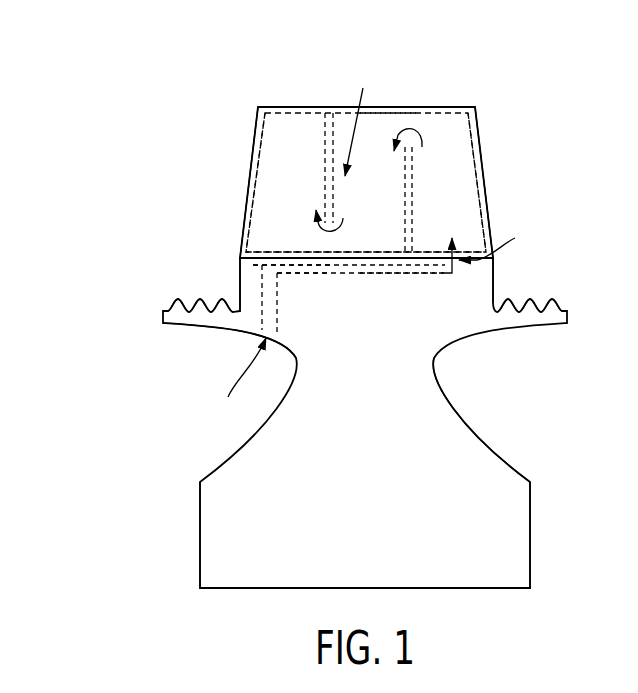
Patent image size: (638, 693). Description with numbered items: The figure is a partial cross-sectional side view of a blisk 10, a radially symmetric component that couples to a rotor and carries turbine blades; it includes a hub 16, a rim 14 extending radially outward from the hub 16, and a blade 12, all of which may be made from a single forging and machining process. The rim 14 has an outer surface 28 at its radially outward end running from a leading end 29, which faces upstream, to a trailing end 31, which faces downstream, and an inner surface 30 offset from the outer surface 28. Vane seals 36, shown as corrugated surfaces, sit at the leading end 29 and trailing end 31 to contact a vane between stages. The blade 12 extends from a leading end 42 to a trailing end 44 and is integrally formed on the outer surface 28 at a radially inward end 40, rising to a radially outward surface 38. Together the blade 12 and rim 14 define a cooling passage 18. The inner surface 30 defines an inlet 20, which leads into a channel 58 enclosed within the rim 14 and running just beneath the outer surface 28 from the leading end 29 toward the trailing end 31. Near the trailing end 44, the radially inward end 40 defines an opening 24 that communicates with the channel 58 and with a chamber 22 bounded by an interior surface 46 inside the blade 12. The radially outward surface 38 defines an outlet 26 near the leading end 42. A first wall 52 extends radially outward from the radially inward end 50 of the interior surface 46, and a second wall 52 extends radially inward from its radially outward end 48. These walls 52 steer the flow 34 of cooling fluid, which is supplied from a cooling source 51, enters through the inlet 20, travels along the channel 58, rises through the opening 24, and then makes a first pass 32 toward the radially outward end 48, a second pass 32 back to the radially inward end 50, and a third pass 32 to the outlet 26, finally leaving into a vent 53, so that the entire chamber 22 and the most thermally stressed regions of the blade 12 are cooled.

The blisk 10 is at (88, 300).
The blade 12 is at (224, 88).
The rim 14 is at (522, 358).
The hub 16 is at (180, 523).
The cooling passage 18 is at (458, 130).
The inlet 20 is at (241, 383).
The chamber 22 is at (358, 120).
The opening 24 is at (498, 241).
The outlet 26 is at (272, 103).
The outer surface 28 is at (263, 257).
The leading end 29 is at (238, 283).
The inner surface 30 is at (287, 340).
The trailing end 31 is at (496, 291).
The pass 32 is at (278, 223).
The flow 34 is at (398, 135).
The vane seal 36 is at (180, 300).
The radially outward surface 38 is at (450, 107).
The radially inward end 40 is at (411, 267).
The leading end 42 is at (252, 144).
The trailing end 44 is at (490, 207).
The interior surface 46 is at (481, 158).
The radially outward end 48 is at (389, 106).
The radially inward end 50 is at (292, 270).
The cooling source 51 is at (206, 371).
The wall 52 is at (325, 162).
The vent 53 is at (312, 59).
The channel 58 is at (392, 271).